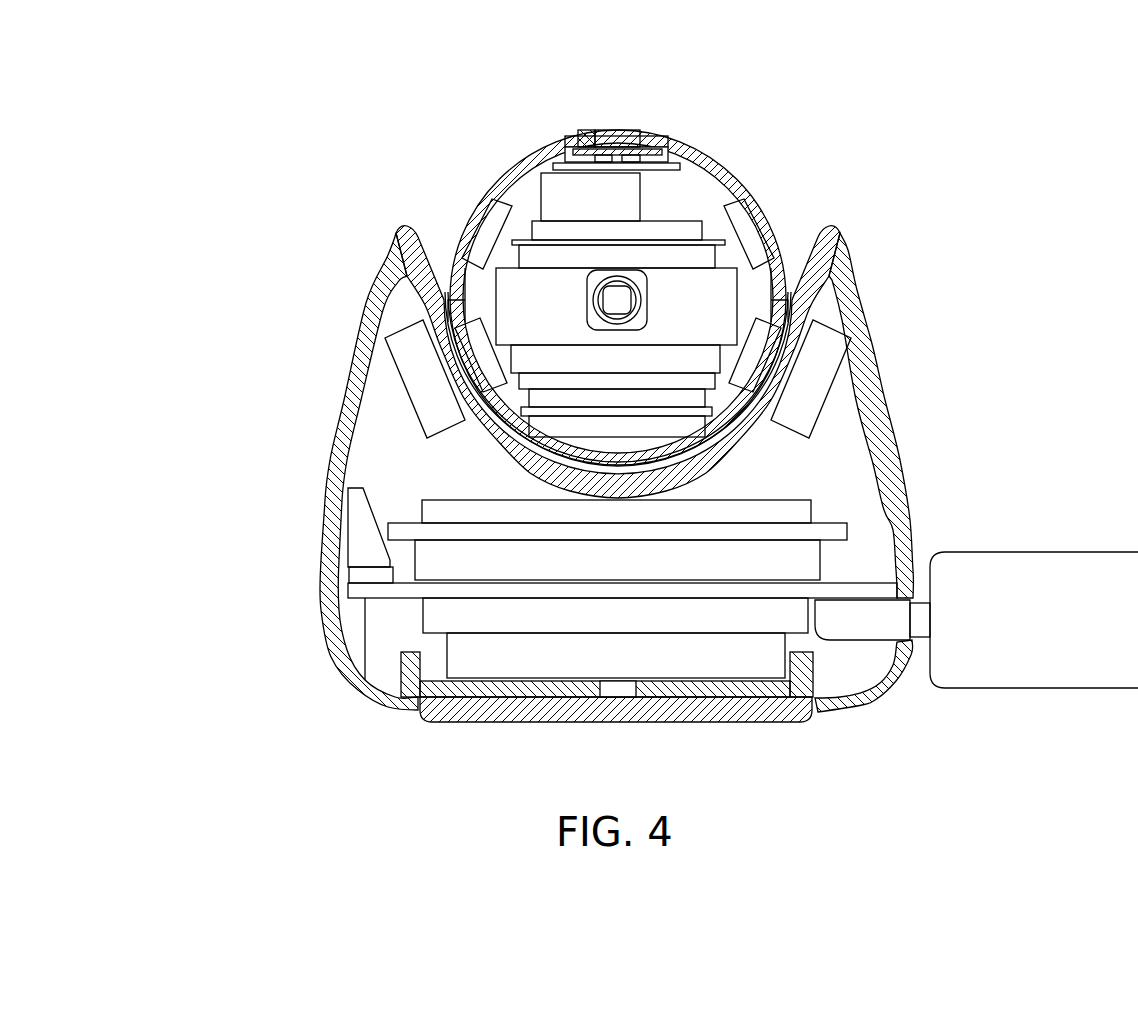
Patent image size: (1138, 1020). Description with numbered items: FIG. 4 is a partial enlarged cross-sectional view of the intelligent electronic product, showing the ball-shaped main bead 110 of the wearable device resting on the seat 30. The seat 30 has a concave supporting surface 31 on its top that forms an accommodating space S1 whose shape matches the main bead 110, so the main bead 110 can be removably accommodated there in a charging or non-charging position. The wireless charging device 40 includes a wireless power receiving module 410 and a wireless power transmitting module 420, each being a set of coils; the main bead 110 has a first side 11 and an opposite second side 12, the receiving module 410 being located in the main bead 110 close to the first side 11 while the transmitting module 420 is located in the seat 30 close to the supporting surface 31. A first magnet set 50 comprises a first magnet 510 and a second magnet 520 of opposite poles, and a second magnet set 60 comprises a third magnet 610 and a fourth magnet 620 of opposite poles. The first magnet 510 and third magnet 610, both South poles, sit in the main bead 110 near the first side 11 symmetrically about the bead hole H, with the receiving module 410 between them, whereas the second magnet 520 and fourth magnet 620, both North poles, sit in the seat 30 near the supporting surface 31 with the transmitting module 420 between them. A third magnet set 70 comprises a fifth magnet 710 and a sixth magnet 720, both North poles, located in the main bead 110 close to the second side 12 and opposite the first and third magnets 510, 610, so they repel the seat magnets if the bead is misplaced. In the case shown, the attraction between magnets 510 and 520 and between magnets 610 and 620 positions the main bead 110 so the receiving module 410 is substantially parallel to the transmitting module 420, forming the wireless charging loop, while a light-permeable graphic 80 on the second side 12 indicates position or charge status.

The first side 11 is at (628, 476).
The second side 12 is at (623, 124).
The seat 30 is at (303, 595).
The supporting surface 31 is at (648, 383).
The wireless charging device 40 is at (548, 541).
The wireless power receiving module 410 is at (585, 421).
The wireless power transmitting module 420 is at (473, 508).
The first magnet set 50 is at (373, 350).
The first magnet 510 is at (488, 328).
The second magnet 520 is at (412, 353).
The second magnet set 60 is at (863, 350).
The third magnet 610 is at (748, 328).
The fourth magnet 620 is at (826, 353).
The third magnet set 70 is at (576, 184).
The fifth magnet 710 is at (497, 213).
The sixth magnet 720 is at (720, 211).
The graphic 80 is at (583, 124).
The main bead 110 is at (742, 154).
The bead hole H is at (637, 293).
The accommodating space S1 is at (753, 431).